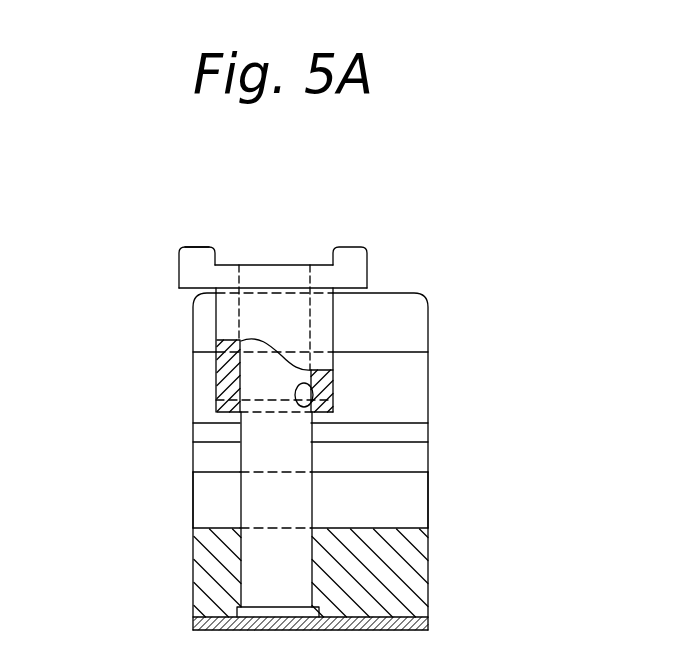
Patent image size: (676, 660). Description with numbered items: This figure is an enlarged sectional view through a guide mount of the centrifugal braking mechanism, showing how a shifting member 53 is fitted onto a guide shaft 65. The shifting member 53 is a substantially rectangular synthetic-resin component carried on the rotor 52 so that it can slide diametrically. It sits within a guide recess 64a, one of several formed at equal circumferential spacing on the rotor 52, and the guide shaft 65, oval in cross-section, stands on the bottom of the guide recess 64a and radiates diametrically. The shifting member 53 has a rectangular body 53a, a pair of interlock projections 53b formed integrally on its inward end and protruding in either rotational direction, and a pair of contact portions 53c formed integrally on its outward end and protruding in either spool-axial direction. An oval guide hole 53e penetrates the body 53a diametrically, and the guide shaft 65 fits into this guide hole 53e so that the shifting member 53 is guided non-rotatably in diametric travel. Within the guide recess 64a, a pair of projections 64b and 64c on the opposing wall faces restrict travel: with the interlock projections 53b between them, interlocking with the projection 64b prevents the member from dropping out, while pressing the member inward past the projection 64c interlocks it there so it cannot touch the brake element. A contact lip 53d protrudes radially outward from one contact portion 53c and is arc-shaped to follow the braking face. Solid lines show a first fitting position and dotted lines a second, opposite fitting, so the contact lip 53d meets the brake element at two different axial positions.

The rotor 52 is at (428, 583).
The shifting member 53 is at (293, 265).
The body 53a is at (222, 372).
The interlock projections 53b is at (220, 408).
The contact portions 53c is at (187, 281).
The contact lip 53d is at (203, 257).
The guide hole 53e is at (311, 407).
The guide recess 64a is at (407, 510).
The projection 64b is at (413, 335).
The projection 64c is at (405, 465).
The guide shaft 65 is at (265, 508).